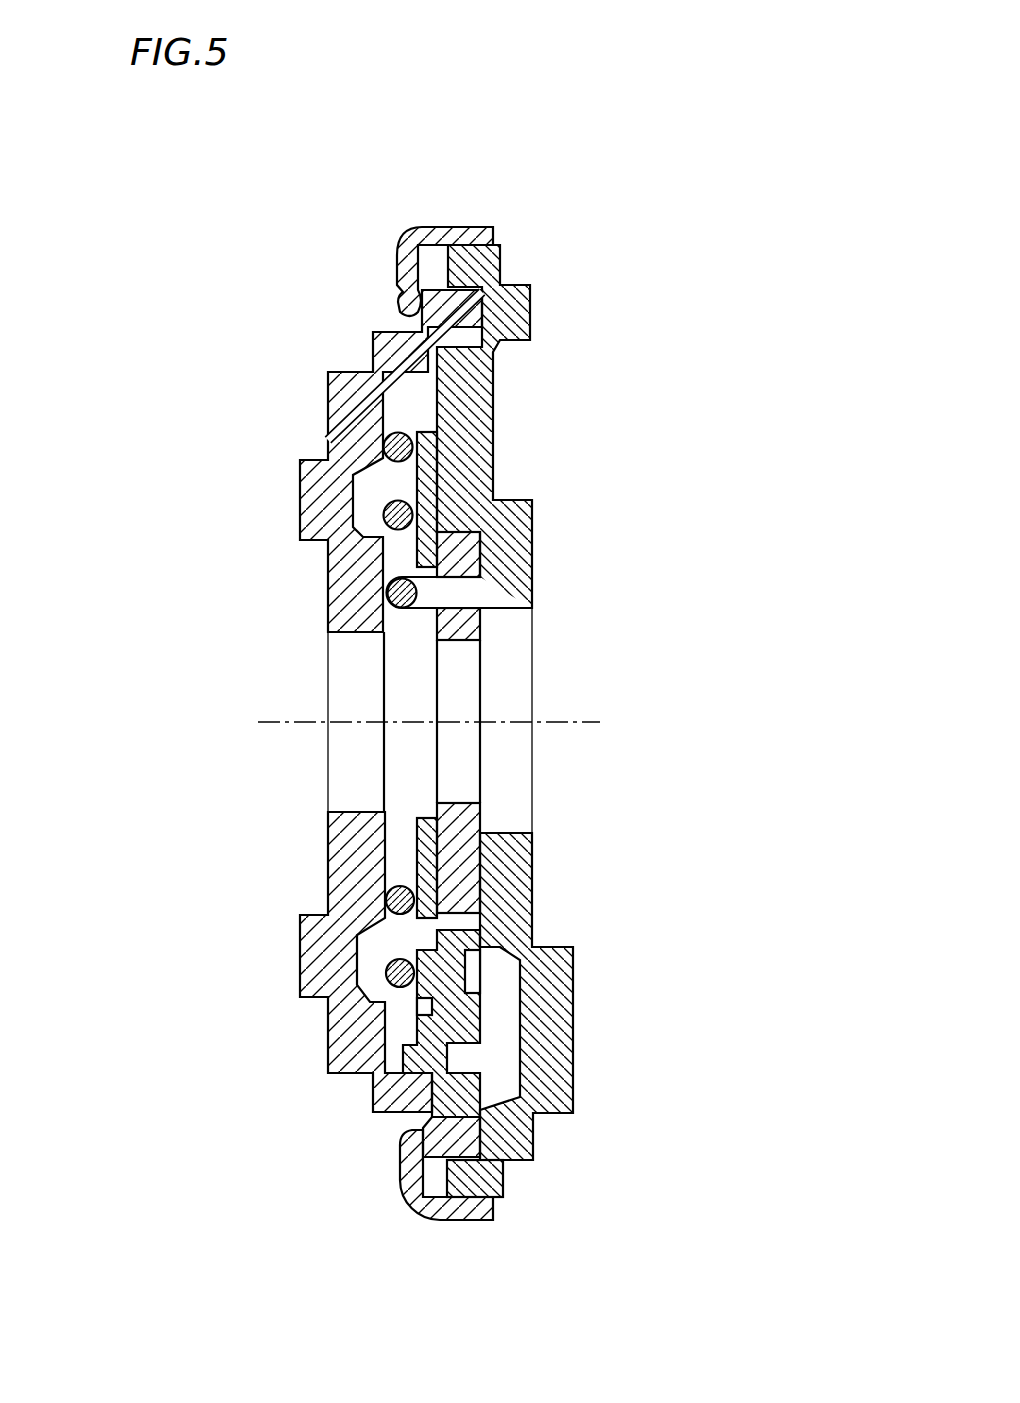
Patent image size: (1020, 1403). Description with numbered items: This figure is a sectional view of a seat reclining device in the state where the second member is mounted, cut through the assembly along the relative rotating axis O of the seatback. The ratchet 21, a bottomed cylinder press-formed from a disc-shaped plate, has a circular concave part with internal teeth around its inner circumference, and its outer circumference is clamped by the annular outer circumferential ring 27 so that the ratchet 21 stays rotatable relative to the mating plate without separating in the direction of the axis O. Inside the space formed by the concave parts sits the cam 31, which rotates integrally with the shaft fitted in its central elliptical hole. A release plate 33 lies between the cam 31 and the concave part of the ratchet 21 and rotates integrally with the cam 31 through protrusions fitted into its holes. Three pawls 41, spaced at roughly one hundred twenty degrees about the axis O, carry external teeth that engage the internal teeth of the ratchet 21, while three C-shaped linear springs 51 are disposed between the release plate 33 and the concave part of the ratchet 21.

The ratchet 21 is at (348, 412).
The outer circumferential ring 27 is at (470, 230).
The cam 31 is at (470, 530).
The release plate 33 is at (417, 860).
The pawl 41 is at (470, 1020).
The linear spring 51 is at (398, 443).
The axis O is at (580, 722).